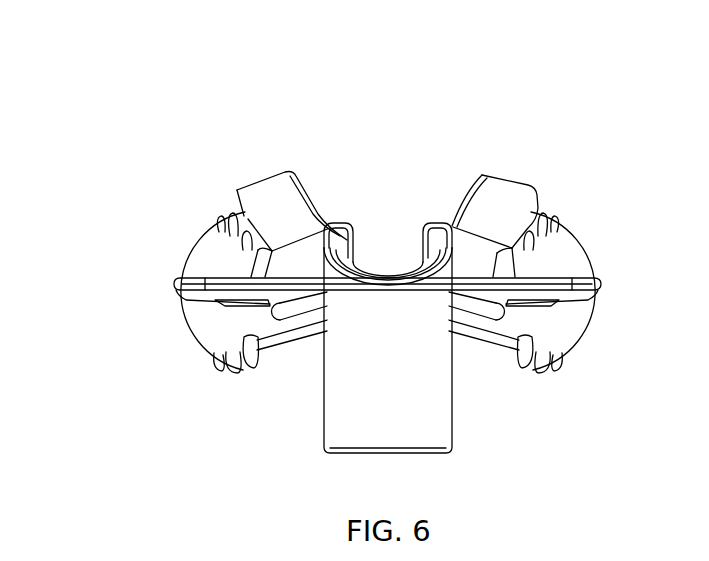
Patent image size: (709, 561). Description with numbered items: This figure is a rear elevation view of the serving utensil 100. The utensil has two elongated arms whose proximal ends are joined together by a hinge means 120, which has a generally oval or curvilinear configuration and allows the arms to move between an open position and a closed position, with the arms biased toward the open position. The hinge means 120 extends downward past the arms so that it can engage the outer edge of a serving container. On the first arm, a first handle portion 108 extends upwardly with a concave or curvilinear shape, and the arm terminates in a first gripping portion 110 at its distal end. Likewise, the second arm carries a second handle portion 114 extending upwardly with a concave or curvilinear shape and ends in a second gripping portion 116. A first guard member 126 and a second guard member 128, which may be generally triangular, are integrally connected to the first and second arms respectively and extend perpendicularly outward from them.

The serving utensil 100 is at (170, 88).
The first handle portion 108 is at (502, 190).
The first gripping portion 110 is at (563, 246).
The second handle portion 114 is at (270, 186).
The second gripping portion 116 is at (203, 260).
The hinge means 120 is at (428, 432).
The first guard member 126 is at (581, 283).
The second guard member 128 is at (184, 290).